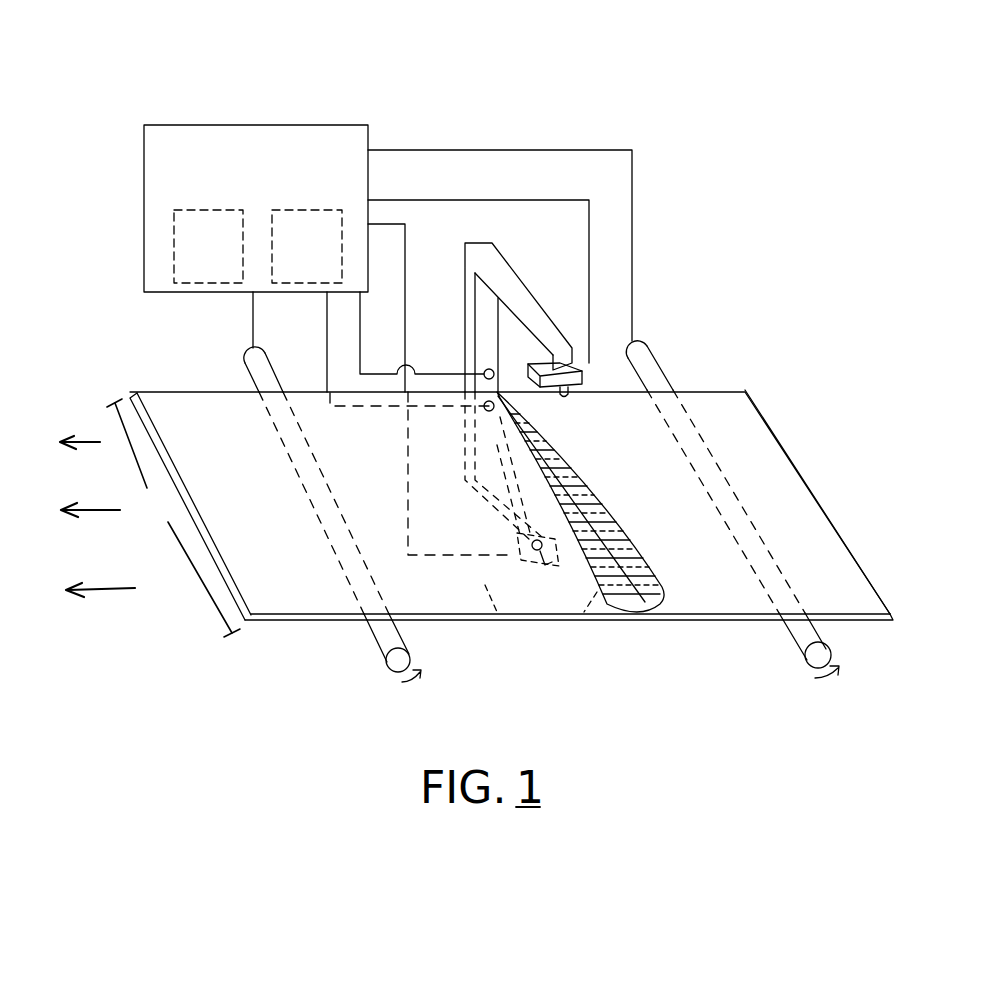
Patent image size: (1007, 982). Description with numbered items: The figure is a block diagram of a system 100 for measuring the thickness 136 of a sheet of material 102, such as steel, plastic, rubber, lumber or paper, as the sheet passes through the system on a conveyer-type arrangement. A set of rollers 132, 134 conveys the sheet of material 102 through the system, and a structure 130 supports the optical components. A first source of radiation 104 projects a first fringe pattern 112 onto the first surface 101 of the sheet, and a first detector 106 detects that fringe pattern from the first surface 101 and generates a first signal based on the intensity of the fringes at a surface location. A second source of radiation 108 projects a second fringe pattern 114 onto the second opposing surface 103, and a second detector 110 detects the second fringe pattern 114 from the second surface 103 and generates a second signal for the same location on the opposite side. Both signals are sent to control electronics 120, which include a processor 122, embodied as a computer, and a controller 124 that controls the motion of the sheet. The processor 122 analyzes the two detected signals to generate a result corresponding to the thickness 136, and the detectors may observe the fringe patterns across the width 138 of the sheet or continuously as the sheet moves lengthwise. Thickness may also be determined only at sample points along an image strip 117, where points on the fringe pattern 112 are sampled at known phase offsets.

The system 100 is at (610, 108).
The first surface 101 is at (710, 585).
The sheet of material 102 is at (790, 455).
The second opposing surface 103 is at (497, 614).
The first source of radiation 104 is at (485, 369).
The first detector 106 is at (568, 396).
The second source of radiation 108 is at (484, 408).
The second detector 110 is at (546, 563).
The first fringe pattern 112 is at (655, 567).
The second fringe pattern 114 is at (582, 622).
The image strip 117 is at (587, 492).
The control electronics 120 is at (144, 163).
The processor 122 is at (173, 267).
The controller 124 is at (323, 211).
The structure 130 is at (517, 274).
The roller 132 is at (378, 649).
The roller 134 is at (800, 650).
The thickness 136 is at (890, 606).
The width 138 is at (150, 518).